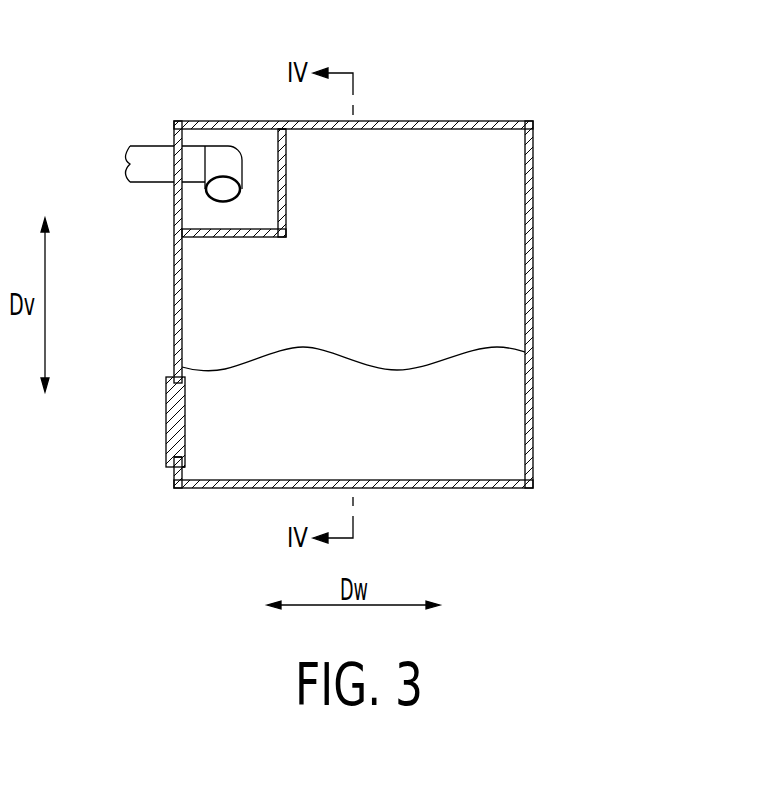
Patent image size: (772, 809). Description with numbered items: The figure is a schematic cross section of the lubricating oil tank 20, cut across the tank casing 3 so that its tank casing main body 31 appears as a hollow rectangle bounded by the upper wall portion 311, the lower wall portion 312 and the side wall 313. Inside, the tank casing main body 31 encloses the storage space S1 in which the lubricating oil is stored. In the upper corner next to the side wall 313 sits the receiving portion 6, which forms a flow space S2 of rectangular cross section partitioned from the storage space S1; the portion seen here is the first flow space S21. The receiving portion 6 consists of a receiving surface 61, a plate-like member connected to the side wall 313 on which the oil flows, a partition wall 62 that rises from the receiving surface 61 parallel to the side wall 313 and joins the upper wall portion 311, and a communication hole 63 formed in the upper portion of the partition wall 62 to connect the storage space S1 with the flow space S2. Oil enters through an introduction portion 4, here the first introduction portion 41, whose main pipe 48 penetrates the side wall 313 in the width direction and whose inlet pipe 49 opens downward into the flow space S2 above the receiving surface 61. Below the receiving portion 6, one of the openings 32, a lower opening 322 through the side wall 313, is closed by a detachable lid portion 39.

The liquid ejecting apparatus / tank unit 20 is at (512, 95).
The tank casing 3 is at (548, 275).
The tank casing main body 31 is at (527, 363).
The upper wall portion 311 is at (430, 124).
The lower wall portion 312 is at (470, 488).
The side wall 313 is at (176, 335).
The storage space S1 is at (497, 207).
The lid portion 39 is at (168, 428).
The opening 32 is at (221, 505).
The lower opening 322 is at (185, 452).
The receiving portion 6 is at (294, 251).
The receiving surface 61 is at (235, 237).
The partition wall 62 is at (286, 210).
The communication hole 63 is at (286, 148).
The flow space S2 is at (268, 76).
The first flow space S21 is at (250, 148).
The introduction portion 4 is at (171, 139).
The first introduction portion 41 is at (199, 130).
The main pipe 48 is at (190, 157).
The inlet pipe 49 is at (223, 192).